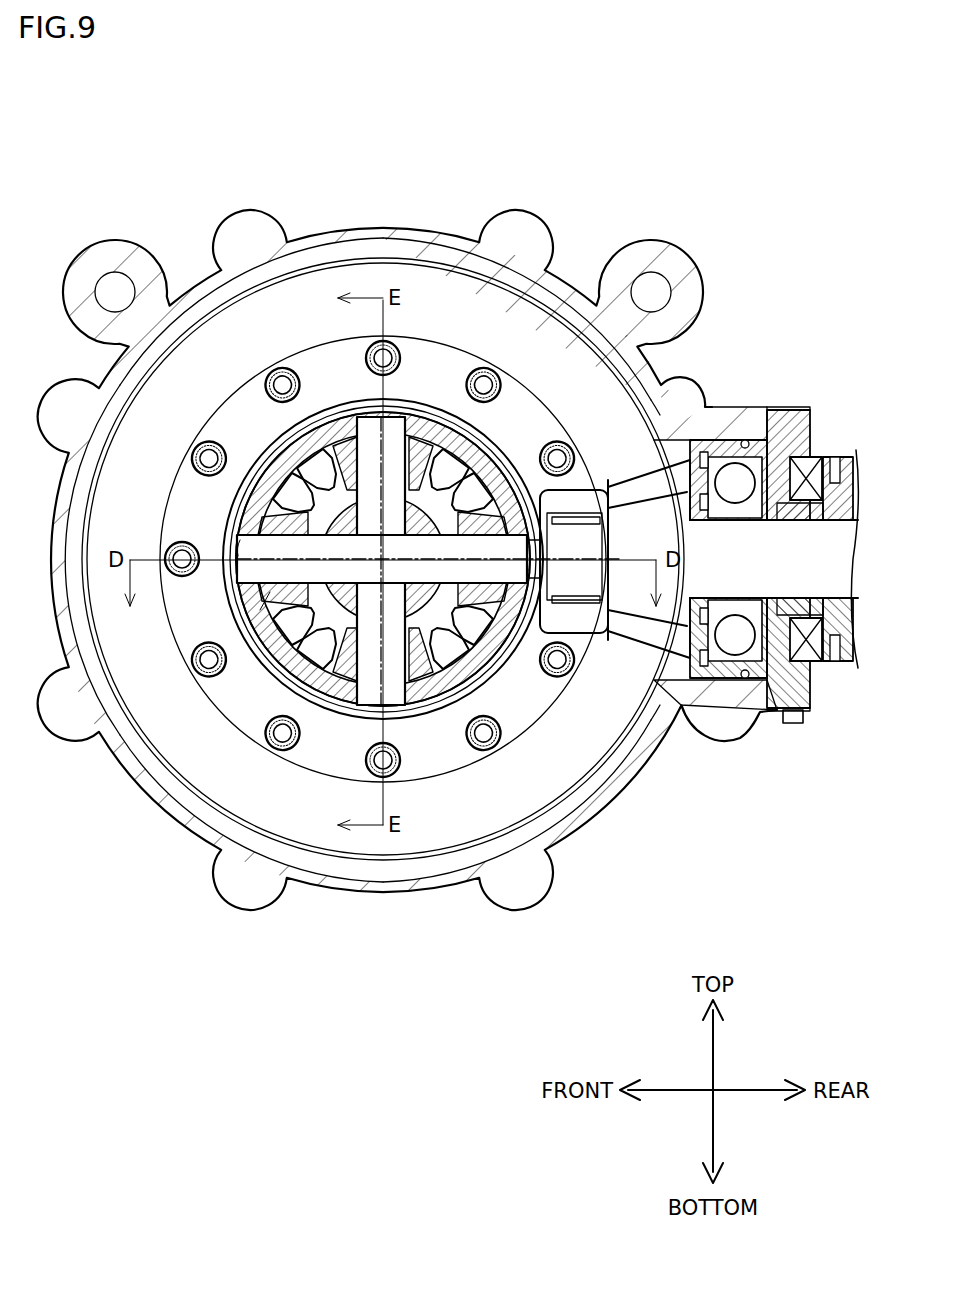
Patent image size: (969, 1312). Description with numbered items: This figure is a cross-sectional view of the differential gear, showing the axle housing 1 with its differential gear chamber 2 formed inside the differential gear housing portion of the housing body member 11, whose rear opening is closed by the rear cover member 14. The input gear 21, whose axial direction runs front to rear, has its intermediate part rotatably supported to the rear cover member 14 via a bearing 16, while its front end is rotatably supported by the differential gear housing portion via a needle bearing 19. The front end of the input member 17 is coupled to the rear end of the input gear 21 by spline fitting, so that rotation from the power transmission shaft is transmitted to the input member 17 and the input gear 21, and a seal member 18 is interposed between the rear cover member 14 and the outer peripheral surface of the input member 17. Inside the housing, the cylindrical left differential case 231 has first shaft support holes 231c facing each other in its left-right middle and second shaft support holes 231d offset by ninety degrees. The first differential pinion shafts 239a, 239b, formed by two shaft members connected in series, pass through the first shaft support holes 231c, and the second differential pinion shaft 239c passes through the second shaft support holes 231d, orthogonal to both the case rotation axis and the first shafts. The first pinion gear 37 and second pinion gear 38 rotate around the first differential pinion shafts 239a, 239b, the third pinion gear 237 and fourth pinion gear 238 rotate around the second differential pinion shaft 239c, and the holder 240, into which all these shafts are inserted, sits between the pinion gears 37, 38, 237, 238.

The axle housing 1 is at (173, 170).
The differential gear chamber 2 is at (421, 274).
The housing body member 11 is at (366, 246).
The rear cover member 14 is at (786, 438).
The bearing 16 is at (728, 480).
The input member 17 is at (838, 458).
The seal member 18 is at (806, 478).
The needle bearing 19 is at (570, 605).
The input gear 21 is at (726, 556).
The first pinion gear 37 is at (278, 596).
The second pinion gear 38 is at (474, 622).
The left differential case 231 is at (322, 418).
The first shaft support hole 231c is at (246, 540).
The second shaft support hole 231d is at (404, 418).
The third pinion gear 237 is at (346, 462).
The fourth pinion gear 238 is at (292, 680).
The first differential pinion shaft 239a is at (248, 571).
The first differential pinion shaft 239b is at (548, 574).
The second differential pinion shaft 239c is at (396, 692).
The holder 240 is at (416, 542).